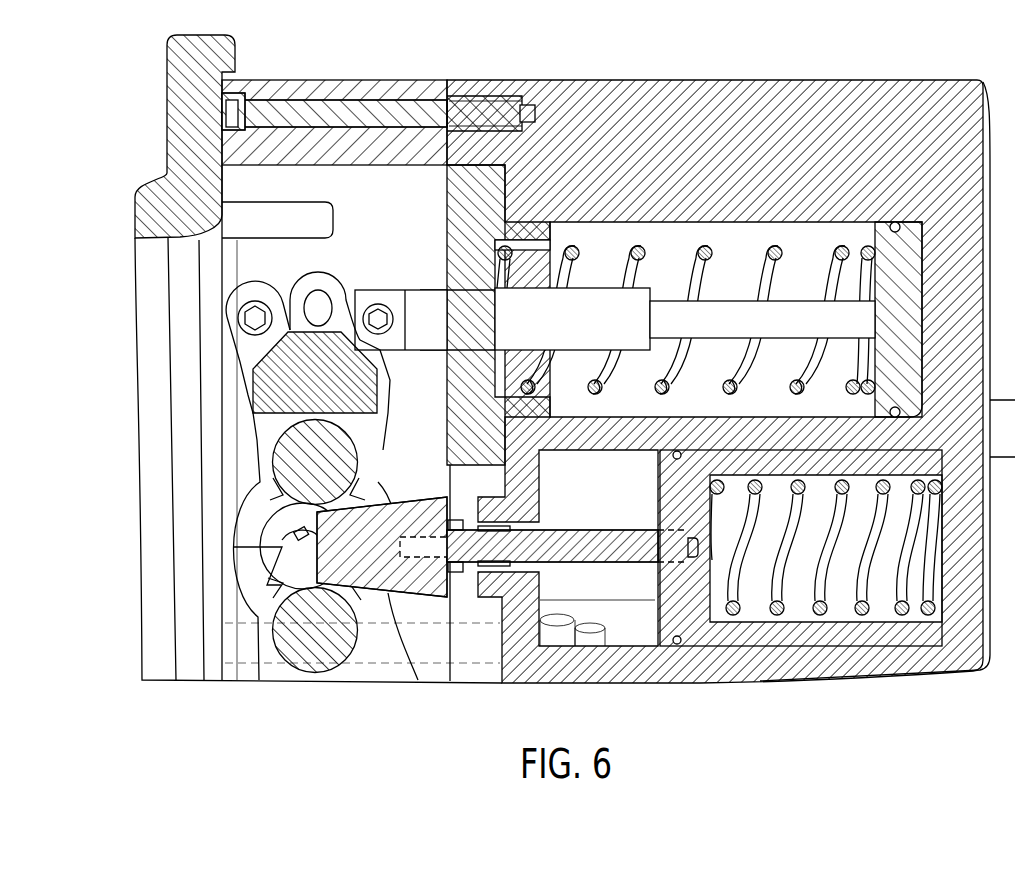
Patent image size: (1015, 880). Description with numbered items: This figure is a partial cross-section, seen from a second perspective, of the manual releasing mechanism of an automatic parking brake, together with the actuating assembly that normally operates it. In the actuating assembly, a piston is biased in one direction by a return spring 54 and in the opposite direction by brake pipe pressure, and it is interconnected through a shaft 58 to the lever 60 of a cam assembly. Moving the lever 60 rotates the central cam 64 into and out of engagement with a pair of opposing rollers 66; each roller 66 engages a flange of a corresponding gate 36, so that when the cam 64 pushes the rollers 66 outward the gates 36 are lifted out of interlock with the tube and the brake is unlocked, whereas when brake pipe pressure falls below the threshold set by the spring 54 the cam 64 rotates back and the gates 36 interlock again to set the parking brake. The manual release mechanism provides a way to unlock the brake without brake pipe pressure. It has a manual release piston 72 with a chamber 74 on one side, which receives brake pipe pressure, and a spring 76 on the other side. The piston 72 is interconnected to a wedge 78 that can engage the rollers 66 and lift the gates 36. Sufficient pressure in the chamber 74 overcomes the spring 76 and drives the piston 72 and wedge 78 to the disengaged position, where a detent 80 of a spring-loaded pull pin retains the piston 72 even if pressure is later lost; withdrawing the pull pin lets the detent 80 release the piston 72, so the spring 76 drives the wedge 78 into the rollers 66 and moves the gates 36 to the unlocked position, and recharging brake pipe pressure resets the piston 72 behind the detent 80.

The gate 36 is at (248, 378).
The return spring 54 is at (703, 246).
The shaft 58 is at (787, 328).
The lever 60 is at (390, 288).
The central cam 64 is at (340, 545).
The roller 66 is at (263, 432).
The manual release piston 72 is at (658, 621).
The chamber 74 is at (622, 618).
The spring 76 is at (862, 612).
The wedge 78 is at (342, 543).
The detent 80 is at (733, 613).